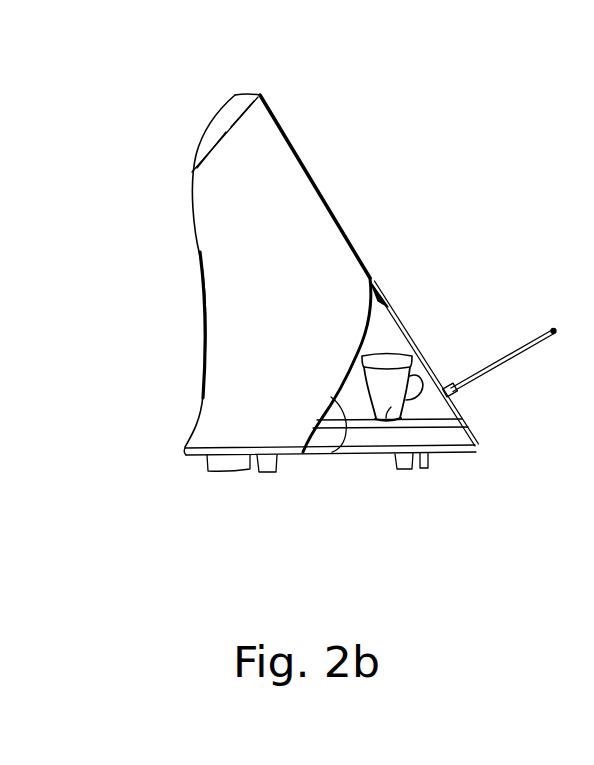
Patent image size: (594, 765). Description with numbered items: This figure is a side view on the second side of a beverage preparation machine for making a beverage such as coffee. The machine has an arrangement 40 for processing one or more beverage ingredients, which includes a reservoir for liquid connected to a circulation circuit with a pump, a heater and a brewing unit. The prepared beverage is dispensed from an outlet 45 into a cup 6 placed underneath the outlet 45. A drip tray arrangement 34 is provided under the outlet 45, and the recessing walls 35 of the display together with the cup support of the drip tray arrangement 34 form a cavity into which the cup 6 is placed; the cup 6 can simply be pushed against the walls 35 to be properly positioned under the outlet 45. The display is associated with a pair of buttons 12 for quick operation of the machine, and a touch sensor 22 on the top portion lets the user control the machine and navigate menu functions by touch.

The buttons 12 is at (333, 211).
The touch sensor 22 is at (235, 95).
The arrangement for processing beverage ingredients 40 is at (290, 307).
The outlet 45 is at (371, 336).
The cup 6 is at (378, 423).
The walls 35 is at (327, 457).
The drip tray arrangement 34 is at (437, 437).